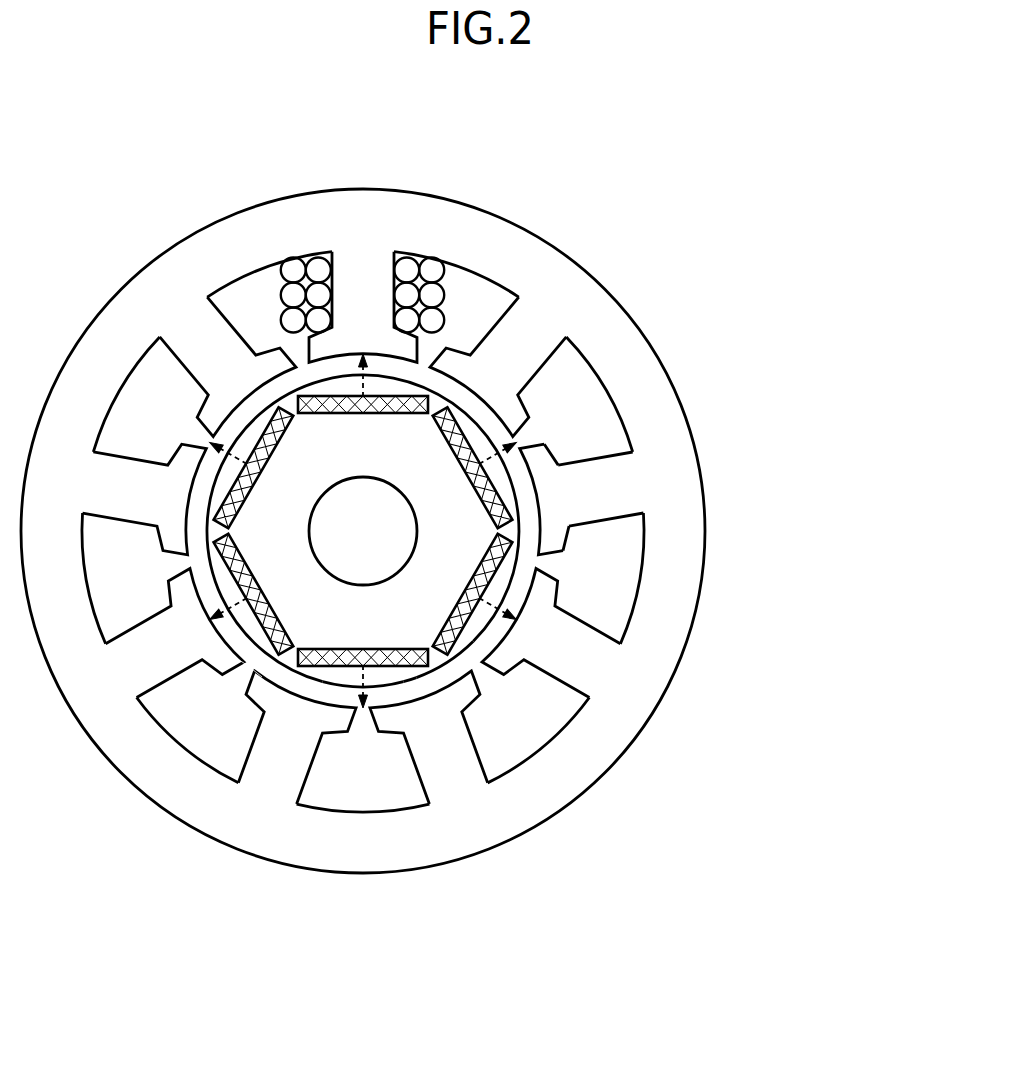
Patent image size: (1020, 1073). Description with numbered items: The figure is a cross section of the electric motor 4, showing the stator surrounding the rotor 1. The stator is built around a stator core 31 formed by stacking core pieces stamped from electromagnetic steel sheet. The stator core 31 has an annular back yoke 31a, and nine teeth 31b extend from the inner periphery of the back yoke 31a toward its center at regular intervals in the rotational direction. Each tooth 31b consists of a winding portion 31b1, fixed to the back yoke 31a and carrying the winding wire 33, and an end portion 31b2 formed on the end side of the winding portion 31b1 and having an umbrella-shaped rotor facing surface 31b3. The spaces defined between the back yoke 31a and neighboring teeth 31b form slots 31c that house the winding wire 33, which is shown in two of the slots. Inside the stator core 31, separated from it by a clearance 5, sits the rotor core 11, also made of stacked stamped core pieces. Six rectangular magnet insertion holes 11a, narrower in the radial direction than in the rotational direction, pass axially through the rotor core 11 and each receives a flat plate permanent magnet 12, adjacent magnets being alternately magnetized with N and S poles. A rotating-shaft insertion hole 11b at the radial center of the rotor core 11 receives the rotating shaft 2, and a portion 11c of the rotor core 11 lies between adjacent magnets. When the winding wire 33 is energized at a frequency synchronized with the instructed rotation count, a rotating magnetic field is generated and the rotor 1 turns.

The electric motor 4 is at (374, 135).
The rotor 1 is at (792, 680).
The rotor core 11 is at (497, 664).
The magnet insertion hole 11a is at (388, 667).
The rotating-shaft insertion hole 11b is at (342, 583).
The bridge portion between magnets of rotor core 11c is at (436, 660).
The permanent magnet 12 is at (458, 632).
The rotating shaft 2 is at (363, 531).
The clearance 5 is at (253, 652).
The stator core 31 is at (885, 556).
The back yoke 31a is at (652, 411).
The tooth 31b is at (479, 532).
The winding portion 31b1 is at (615, 477).
The end portion 31b2 is at (553, 500).
The rotor facing surface 31b3 is at (535, 518).
The slot 31c is at (573, 382).
The winding wire 33 is at (428, 273).